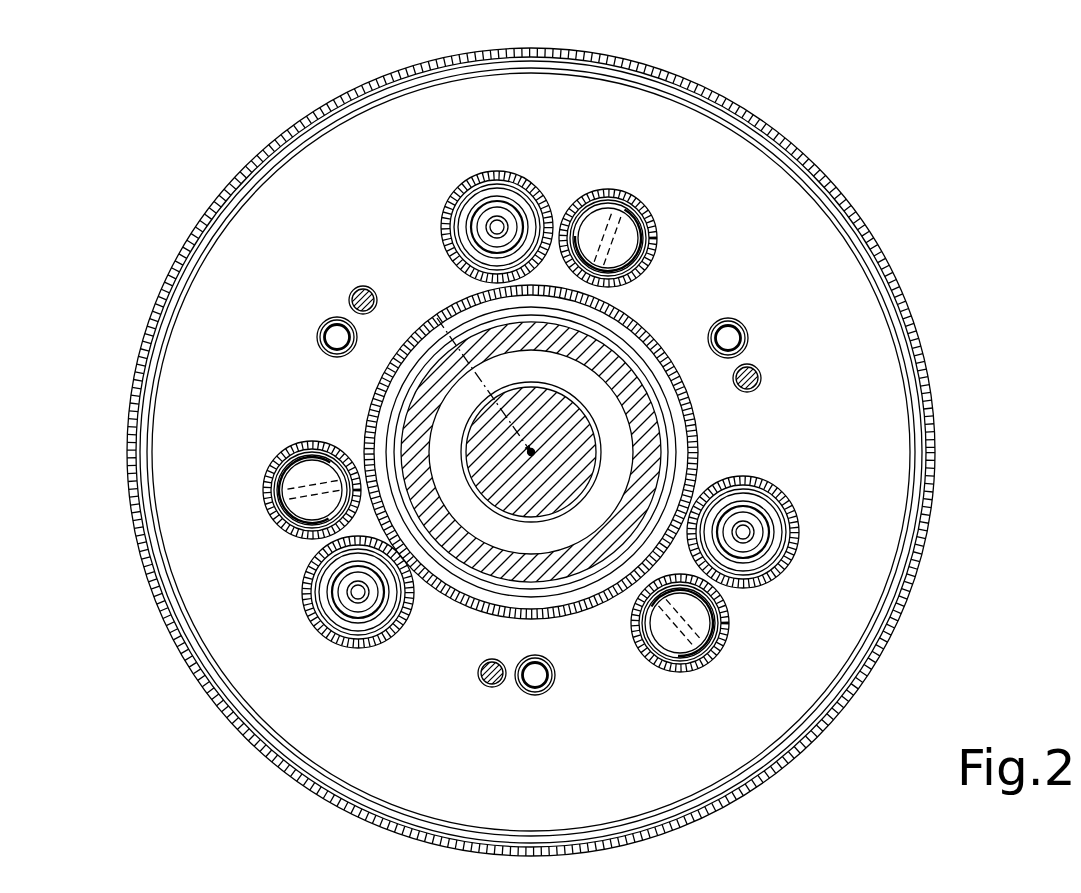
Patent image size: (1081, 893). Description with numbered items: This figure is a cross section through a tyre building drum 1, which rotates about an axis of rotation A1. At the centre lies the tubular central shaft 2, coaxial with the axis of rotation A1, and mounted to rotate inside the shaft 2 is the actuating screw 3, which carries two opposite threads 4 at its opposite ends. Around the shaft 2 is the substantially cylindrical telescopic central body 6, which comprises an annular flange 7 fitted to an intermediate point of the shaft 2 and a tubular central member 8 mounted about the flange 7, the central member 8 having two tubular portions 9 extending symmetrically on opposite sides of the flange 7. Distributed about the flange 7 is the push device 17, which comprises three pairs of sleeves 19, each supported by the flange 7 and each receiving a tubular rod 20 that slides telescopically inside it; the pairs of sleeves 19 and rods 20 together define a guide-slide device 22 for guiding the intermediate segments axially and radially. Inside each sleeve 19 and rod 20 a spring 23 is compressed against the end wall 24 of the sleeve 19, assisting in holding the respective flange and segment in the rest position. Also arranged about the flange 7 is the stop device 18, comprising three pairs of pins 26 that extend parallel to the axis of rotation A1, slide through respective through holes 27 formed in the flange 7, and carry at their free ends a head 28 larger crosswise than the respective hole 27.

The tyre building drum 1 is at (575, 445).
The tubular central shaft 2 is at (546, 414).
The actuating screw 3 is at (588, 398).
The opposite threads 4 is at (531, 523).
The telescopic central body 6 is at (531, 445).
The annular flange 7 is at (577, 452).
The tubular central member 8 is at (531, 452).
The tubular portions 9 is at (545, 452).
The push device 17 is at (512, 416).
The stop device 18 is at (543, 513).
The sleeves 19 is at (515, 430).
The tubular rods 20 is at (590, 432).
The guide-slide device 22 is at (514, 433).
The spring 23 is at (598, 434).
The end wall 24 is at (507, 473).
The pins 26 is at (569, 477).
The through holes 27 is at (555, 486).
The head 28 is at (511, 503).
The axis of rotation A1 is at (458, 368).